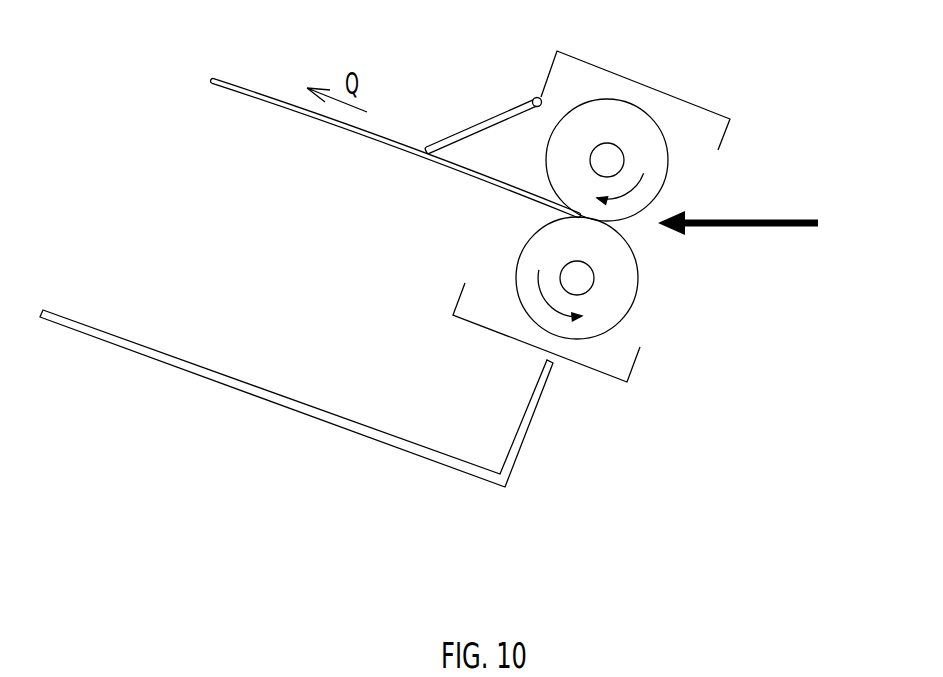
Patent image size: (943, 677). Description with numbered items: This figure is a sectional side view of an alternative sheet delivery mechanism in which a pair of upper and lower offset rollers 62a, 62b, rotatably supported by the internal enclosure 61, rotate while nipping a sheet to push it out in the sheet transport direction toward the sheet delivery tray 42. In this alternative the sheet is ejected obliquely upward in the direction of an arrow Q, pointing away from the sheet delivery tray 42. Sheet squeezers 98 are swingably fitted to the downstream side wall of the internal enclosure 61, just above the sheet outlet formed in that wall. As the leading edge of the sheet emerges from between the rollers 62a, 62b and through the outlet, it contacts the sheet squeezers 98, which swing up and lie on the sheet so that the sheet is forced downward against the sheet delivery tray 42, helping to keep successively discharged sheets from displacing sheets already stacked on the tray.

The sheet delivery tray 42 is at (290, 410).
The sheet squeezers 98 is at (490, 117).
The internal enclosure 61 is at (652, 84).
The upper offset roller 62a is at (666, 176).
The lower offset roller 62b is at (622, 290).